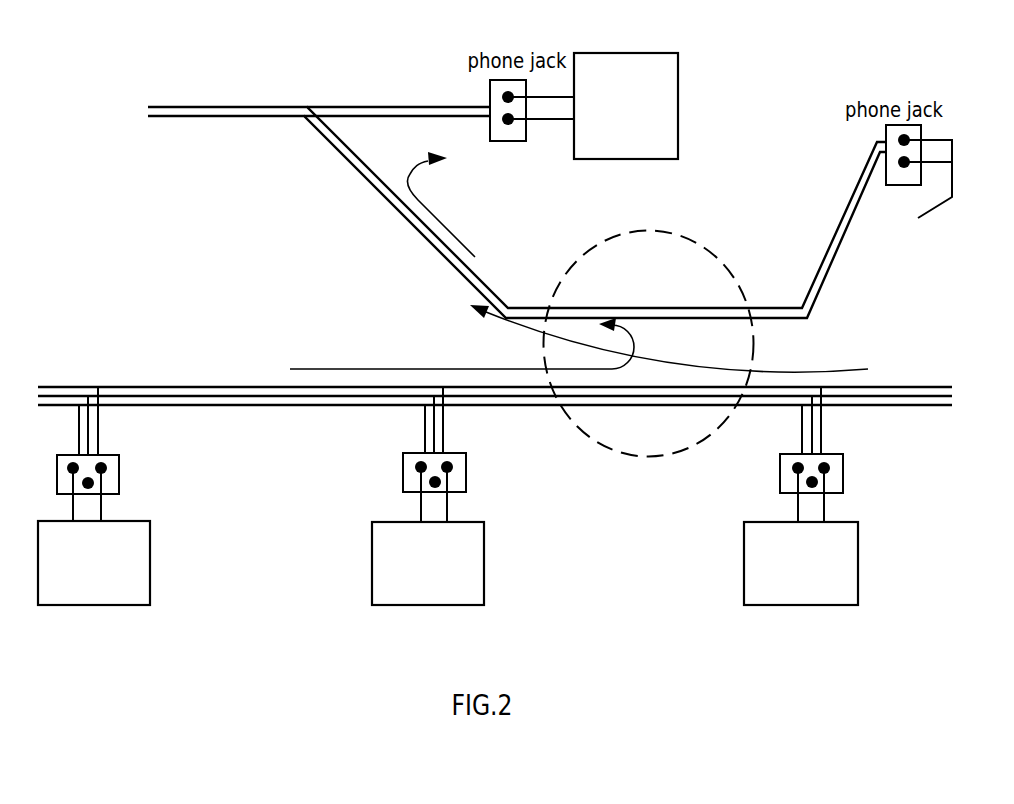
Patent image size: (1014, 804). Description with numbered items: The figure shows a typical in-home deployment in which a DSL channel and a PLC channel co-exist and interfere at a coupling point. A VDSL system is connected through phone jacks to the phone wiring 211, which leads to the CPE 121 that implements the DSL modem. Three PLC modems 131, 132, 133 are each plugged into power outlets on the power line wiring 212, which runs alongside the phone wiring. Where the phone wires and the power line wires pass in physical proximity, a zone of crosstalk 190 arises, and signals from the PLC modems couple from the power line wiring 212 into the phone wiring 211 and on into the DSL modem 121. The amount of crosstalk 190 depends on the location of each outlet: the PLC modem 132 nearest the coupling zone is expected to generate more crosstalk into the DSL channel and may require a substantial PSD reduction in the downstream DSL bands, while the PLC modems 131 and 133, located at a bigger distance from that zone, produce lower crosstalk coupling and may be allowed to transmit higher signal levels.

The phone wiring 211 is at (178, 107).
The CPE 121 is at (678, 53).
The crosstalk 190 is at (566, 271).
The power line wiring 212 is at (180, 386).
The PLC modem 131 is at (93, 606).
The PLC modem 132 is at (428, 606).
The PLC modem 133 is at (800, 606).